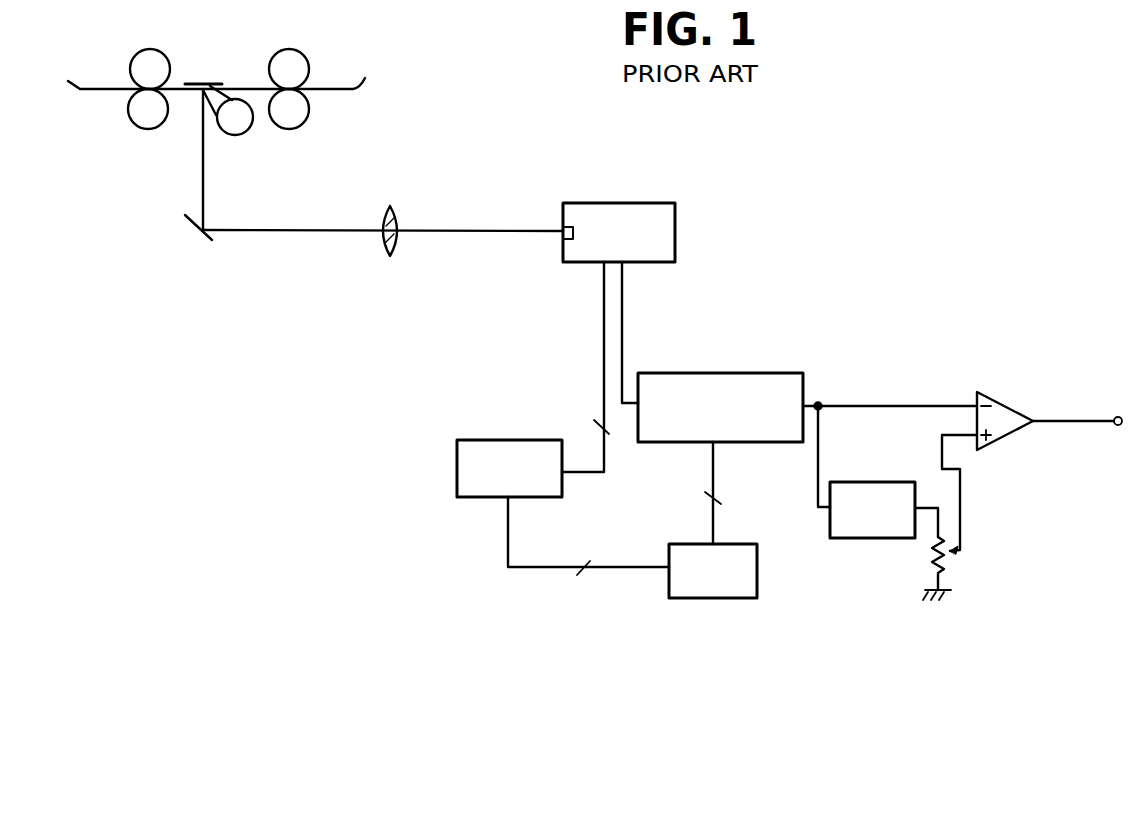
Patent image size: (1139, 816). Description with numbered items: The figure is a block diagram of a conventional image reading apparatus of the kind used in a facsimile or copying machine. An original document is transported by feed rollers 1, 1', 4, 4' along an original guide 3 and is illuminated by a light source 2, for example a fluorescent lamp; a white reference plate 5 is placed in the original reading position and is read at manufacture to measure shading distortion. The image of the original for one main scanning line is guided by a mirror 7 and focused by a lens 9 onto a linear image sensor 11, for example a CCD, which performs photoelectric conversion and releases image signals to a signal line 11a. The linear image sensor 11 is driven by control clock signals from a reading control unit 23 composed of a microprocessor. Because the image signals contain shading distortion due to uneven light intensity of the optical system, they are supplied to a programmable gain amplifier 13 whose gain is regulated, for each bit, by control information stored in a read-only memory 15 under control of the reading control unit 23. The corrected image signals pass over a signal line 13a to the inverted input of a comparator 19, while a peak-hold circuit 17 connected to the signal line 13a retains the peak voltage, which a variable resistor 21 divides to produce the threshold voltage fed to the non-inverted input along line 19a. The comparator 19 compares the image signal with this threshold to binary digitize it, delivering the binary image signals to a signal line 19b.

The feed roller 1 is at (150, 56).
The feed roller 1' is at (148, 128).
The light source 2 is at (229, 135).
The original guide 3 is at (356, 78).
The feed roller 4 is at (295, 63).
The feed roller 4' is at (292, 128).
The white reference plate 5 is at (200, 80).
The mirror 7 is at (196, 246).
The lens 9 is at (397, 212).
The linear image sensor 11 is at (676, 232).
The signal line 11a is at (622, 347).
The programmable gain amplifier 13 is at (727, 373).
The signal line 13a is at (810, 402).
The read-only memory 15 is at (757, 577).
The peak-hold circuit 17 is at (843, 482).
The comparator 19 is at (1013, 404).
The comparator reference input 19a is at (960, 506).
The signal line 19b is at (1089, 420).
The variable resistor 21 is at (946, 560).
The reading control unit 23 is at (521, 440).